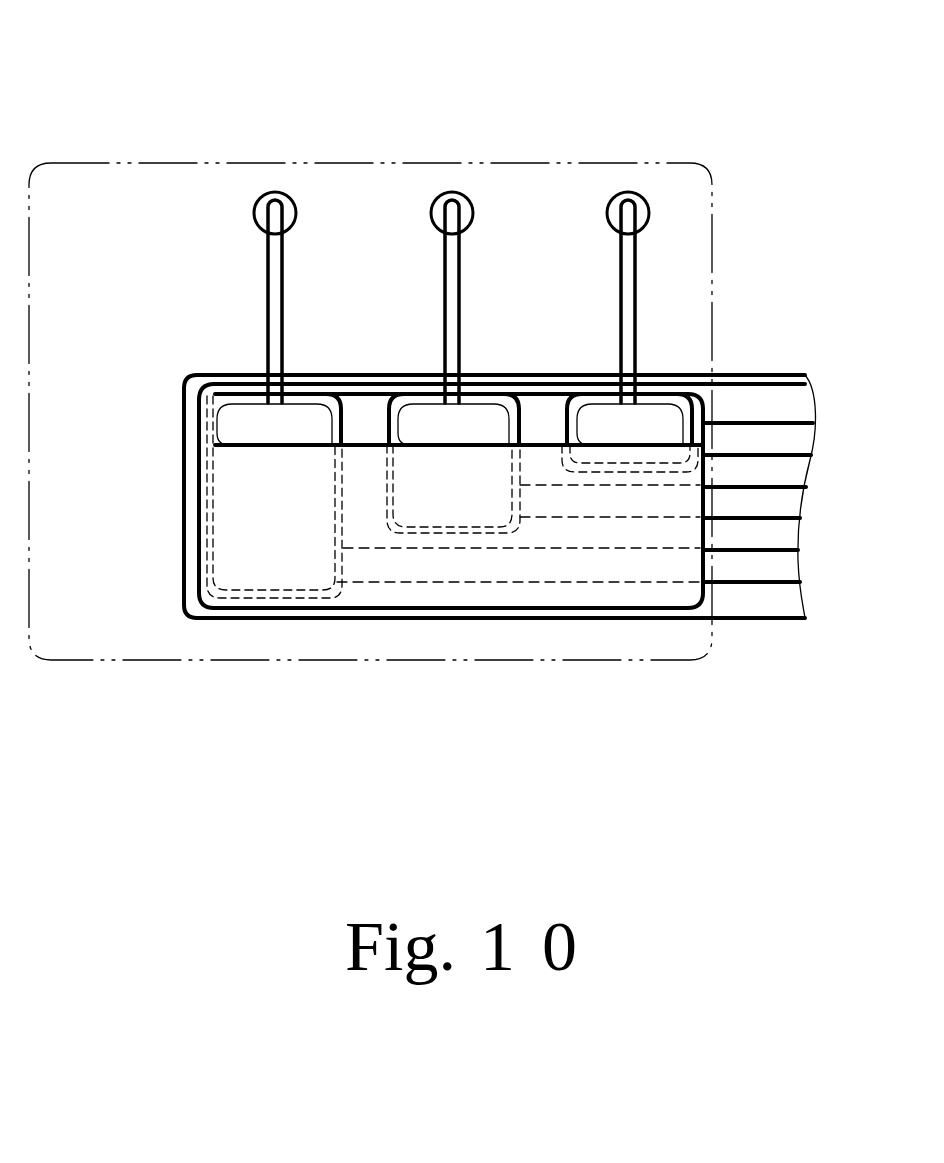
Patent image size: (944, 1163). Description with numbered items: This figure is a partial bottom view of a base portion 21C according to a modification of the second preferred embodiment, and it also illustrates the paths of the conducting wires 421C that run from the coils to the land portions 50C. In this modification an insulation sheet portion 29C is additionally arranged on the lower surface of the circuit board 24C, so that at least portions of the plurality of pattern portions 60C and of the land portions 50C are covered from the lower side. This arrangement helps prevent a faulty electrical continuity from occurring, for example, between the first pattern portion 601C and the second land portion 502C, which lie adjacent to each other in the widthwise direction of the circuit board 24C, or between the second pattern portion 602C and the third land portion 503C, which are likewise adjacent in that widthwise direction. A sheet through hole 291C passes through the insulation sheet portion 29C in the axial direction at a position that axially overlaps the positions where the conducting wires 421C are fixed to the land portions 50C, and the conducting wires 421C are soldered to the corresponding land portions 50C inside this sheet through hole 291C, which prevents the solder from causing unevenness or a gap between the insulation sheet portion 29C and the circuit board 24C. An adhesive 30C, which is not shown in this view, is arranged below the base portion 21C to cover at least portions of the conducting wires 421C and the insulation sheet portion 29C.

The base portion 21C is at (478, 114).
The circuit board 24C is at (760, 410).
The insulation sheet portion 29C is at (363, 487).
The sheet through hole 291C is at (538, 423).
The adhesive 30C is at (100, 565).
The conducting wires 421C is at (275, 305).
The land portions 50C is at (452, 577).
The second land portion 502C is at (438, 432).
The third land portion 503C is at (603, 420).
The pattern portions 60C is at (606, 592).
The first pattern portion 601C is at (627, 570).
The second pattern portion 602C is at (748, 503).